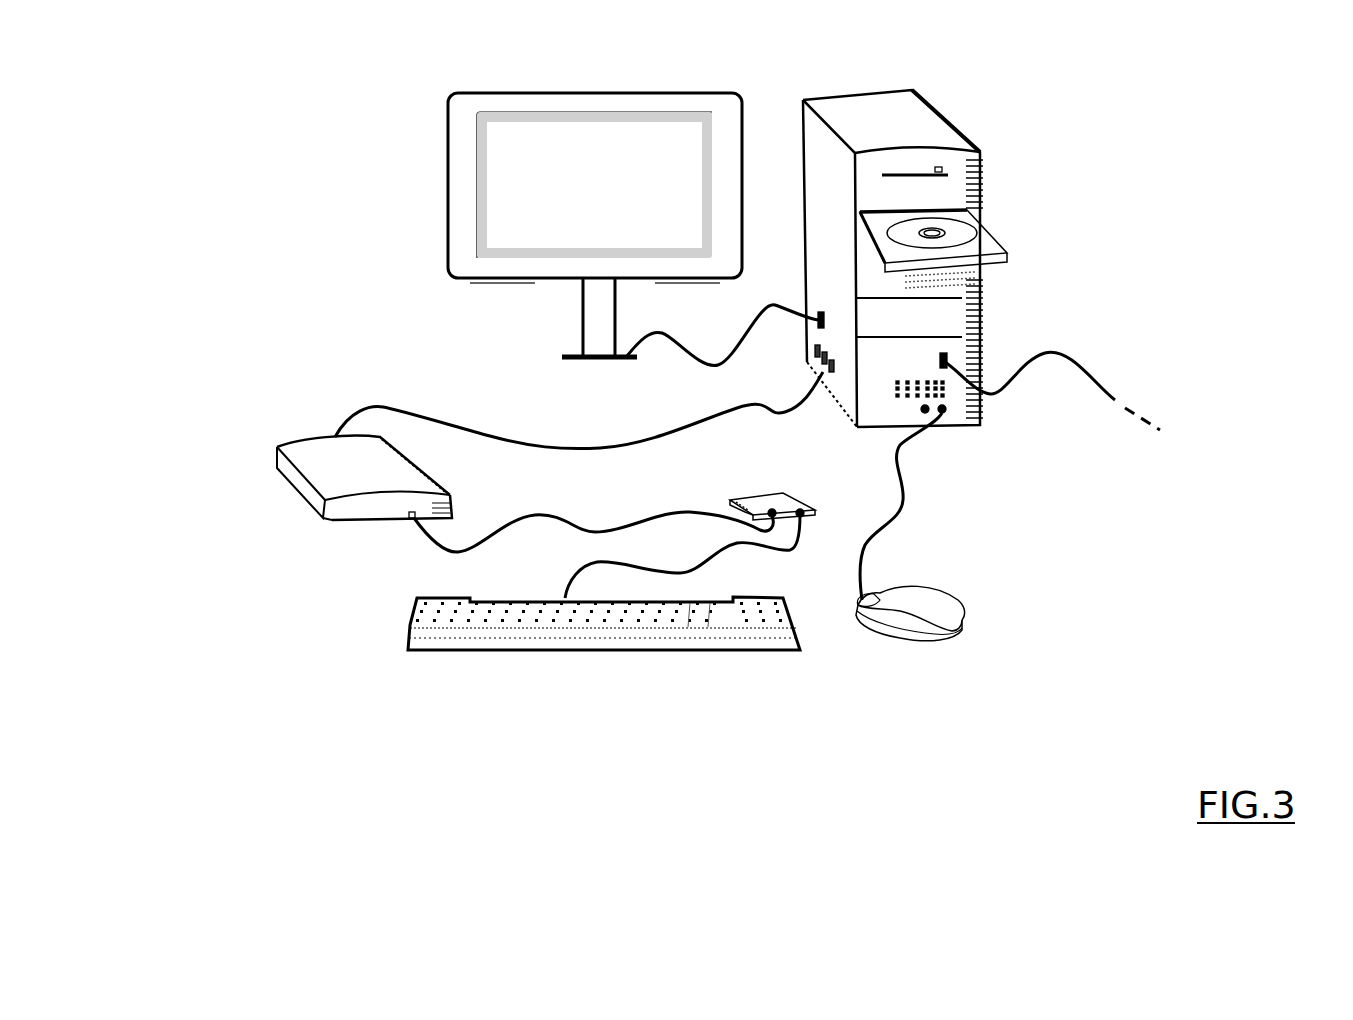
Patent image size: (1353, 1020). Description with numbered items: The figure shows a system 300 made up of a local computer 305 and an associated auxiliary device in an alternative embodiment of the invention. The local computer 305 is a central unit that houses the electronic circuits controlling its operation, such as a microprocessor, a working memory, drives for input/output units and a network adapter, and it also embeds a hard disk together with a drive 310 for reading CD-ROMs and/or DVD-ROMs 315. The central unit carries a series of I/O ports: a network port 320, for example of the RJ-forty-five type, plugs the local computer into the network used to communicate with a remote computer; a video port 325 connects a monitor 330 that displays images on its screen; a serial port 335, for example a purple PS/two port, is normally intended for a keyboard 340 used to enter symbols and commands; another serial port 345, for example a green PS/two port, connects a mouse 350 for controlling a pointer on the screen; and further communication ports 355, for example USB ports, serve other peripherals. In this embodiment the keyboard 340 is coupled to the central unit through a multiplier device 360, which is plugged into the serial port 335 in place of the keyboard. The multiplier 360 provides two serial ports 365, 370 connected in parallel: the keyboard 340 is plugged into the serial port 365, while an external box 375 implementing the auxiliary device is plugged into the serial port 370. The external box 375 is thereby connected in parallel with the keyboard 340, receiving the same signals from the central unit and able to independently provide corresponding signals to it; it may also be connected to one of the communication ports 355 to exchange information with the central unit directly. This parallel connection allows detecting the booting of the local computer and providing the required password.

The system 300 is at (205, 127).
The local computer 305 is at (948, 122).
The drive 310 is at (922, 208).
The CD-ROM/DVD-ROM 315 is at (957, 235).
The network port 320 is at (945, 353).
The video port 325 is at (822, 322).
The monitor 330 is at (553, 93).
The serial port 335 is at (938, 412).
The keyboard 340 is at (592, 642).
The serial port 345 is at (944, 412).
The mouse 350 is at (942, 600).
The communication ports 355 is at (814, 371).
The multiplier device 360 is at (745, 503).
The serial port 365 is at (800, 512).
The serial port 370 is at (768, 515).
The external box 375 is at (320, 437).